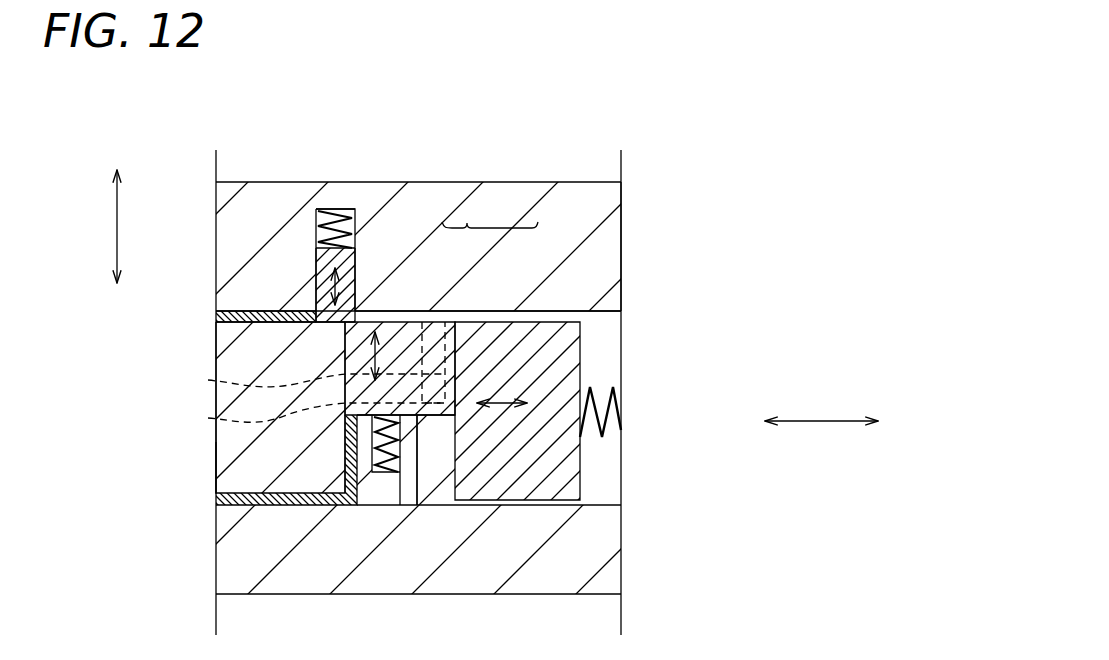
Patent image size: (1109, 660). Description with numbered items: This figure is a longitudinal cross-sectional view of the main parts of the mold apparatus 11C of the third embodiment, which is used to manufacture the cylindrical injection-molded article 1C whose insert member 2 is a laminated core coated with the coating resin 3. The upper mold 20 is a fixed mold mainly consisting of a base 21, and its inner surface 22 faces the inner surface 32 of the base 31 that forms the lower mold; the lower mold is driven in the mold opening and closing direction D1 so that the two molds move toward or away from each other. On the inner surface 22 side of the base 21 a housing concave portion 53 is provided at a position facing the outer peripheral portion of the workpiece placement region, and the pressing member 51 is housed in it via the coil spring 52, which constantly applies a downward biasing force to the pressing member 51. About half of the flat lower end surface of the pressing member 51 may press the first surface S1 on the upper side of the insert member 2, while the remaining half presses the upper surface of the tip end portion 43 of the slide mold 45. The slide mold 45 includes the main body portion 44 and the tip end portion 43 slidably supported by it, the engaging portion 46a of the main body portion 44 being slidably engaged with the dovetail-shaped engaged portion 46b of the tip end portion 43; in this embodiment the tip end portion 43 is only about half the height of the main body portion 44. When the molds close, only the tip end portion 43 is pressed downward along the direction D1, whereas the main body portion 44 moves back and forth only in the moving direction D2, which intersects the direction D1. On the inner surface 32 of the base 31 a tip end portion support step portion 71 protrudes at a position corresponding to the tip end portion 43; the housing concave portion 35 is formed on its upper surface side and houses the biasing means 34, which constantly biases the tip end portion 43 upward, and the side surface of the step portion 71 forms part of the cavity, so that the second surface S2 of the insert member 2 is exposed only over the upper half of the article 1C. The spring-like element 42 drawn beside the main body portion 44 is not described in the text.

The mold apparatus 11C is at (720, 183).
The injection-molded article 1C is at (215, 442).
The insert member 2 is at (240, 475).
The coating resin 3 is at (232, 320).
The upper mold 20 is at (621, 198).
The base 21 is at (597, 255).
The inner surface 22 is at (582, 313).
The base 31 is at (603, 546).
The inner surface 32 is at (602, 502).
The biasing means 34 is at (386, 475).
The housing concave portion 35 is at (395, 446).
The spring 42 is at (612, 440).
The tip end portion 43 is at (410, 333).
The main body portion 44 is at (508, 335).
The slide mold 45 is at (467, 223).
The engaging portion 46a is at (303, 380).
The engaged portion 46b is at (303, 412).
The pressing member 51 is at (348, 273).
The biasing means 52 is at (313, 217).
The housing concave portion 53 is at (328, 283).
The tip end portion support step portion 71 is at (415, 448).
The first surface S1 is at (268, 317).
The second surface S2 is at (347, 351).
The mold opening and closing direction D1 is at (118, 225).
The moving direction D2 is at (820, 422).